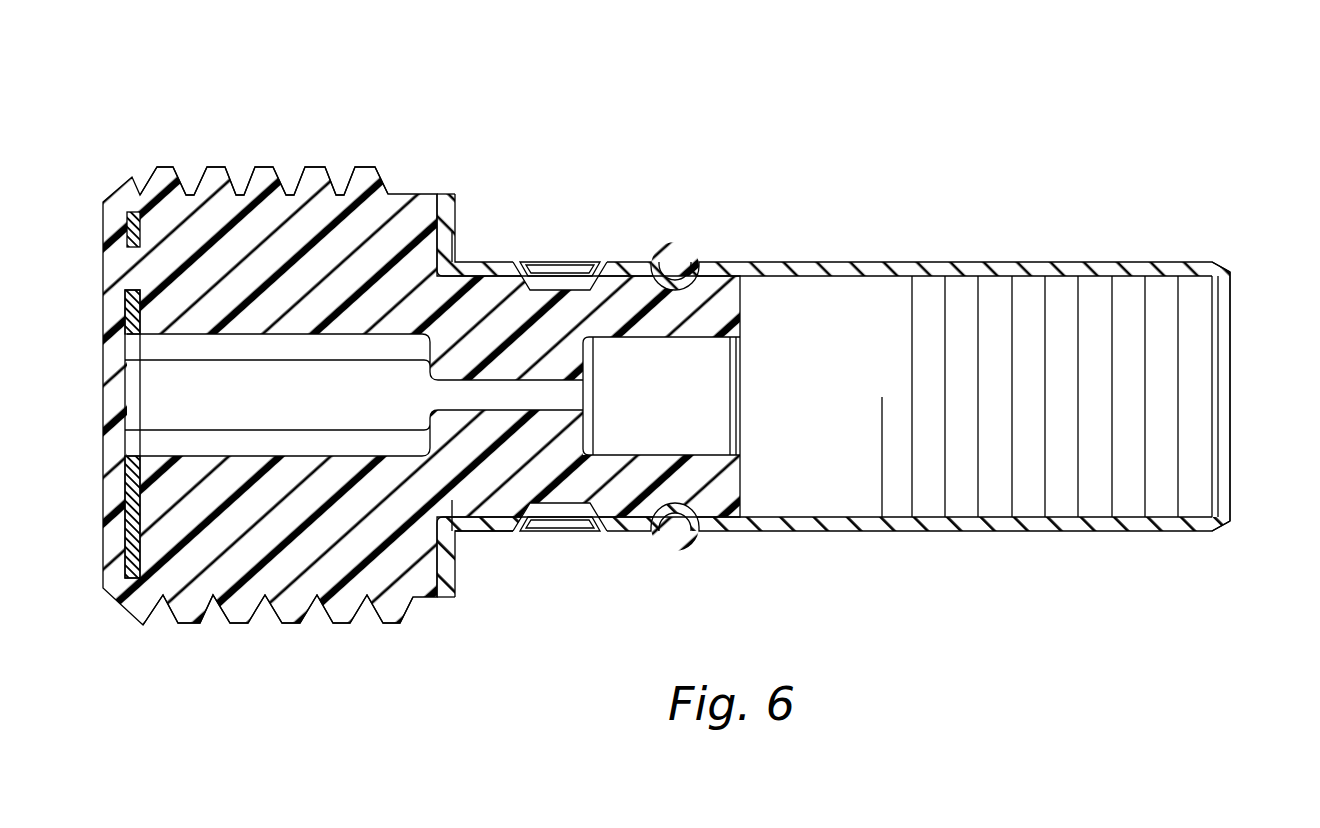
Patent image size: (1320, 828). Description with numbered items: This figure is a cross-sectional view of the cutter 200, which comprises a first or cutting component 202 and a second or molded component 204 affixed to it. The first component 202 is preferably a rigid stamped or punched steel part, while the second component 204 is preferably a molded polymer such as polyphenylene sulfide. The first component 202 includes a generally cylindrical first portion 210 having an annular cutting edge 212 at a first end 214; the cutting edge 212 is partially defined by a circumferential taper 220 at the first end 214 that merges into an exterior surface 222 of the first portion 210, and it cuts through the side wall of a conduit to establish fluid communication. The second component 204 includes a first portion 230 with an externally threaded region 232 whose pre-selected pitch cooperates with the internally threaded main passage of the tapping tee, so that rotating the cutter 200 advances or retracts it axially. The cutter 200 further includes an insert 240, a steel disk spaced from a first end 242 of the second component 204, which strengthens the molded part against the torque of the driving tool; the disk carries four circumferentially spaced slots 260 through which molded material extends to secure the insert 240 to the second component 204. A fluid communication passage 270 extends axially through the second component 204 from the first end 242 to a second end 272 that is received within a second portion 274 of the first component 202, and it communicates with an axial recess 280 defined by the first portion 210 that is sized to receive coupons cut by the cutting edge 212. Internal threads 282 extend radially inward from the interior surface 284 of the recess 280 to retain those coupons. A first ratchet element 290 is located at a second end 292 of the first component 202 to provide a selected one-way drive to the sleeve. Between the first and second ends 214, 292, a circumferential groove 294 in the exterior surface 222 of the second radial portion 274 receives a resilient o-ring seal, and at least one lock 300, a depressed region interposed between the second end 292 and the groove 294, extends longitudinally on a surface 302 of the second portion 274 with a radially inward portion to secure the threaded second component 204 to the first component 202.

The cutter 200 is at (754, 83).
The first component 202 is at (1057, 193).
The second component 204 is at (275, 98).
The first portion 210 is at (793, 255).
The annular cutting edge 212 is at (1232, 268).
The first end 214 is at (1233, 405).
The circumferential taper 220 is at (1232, 530).
The exterior surface 222 is at (1036, 530).
The first portion 230 is at (333, 157).
The externally threaded region 232 is at (290, 625).
The insert 240 is at (132, 540).
The first end 242 is at (103, 272).
The slots 260 is at (131, 248).
The fluid communication passage 270 is at (665, 418).
The second end 272 is at (722, 295).
The second portion 274 is at (511, 538).
The axial recess 280 is at (1100, 492).
The internal threads 282 is at (1190, 500).
The interior surface 284 is at (967, 507).
The first ratchet element 290 is at (460, 225).
The second end 292 is at (452, 597).
The circumferential groove 294 is at (683, 543).
The lock 300 is at (563, 262).
The surface 302 is at (490, 531).